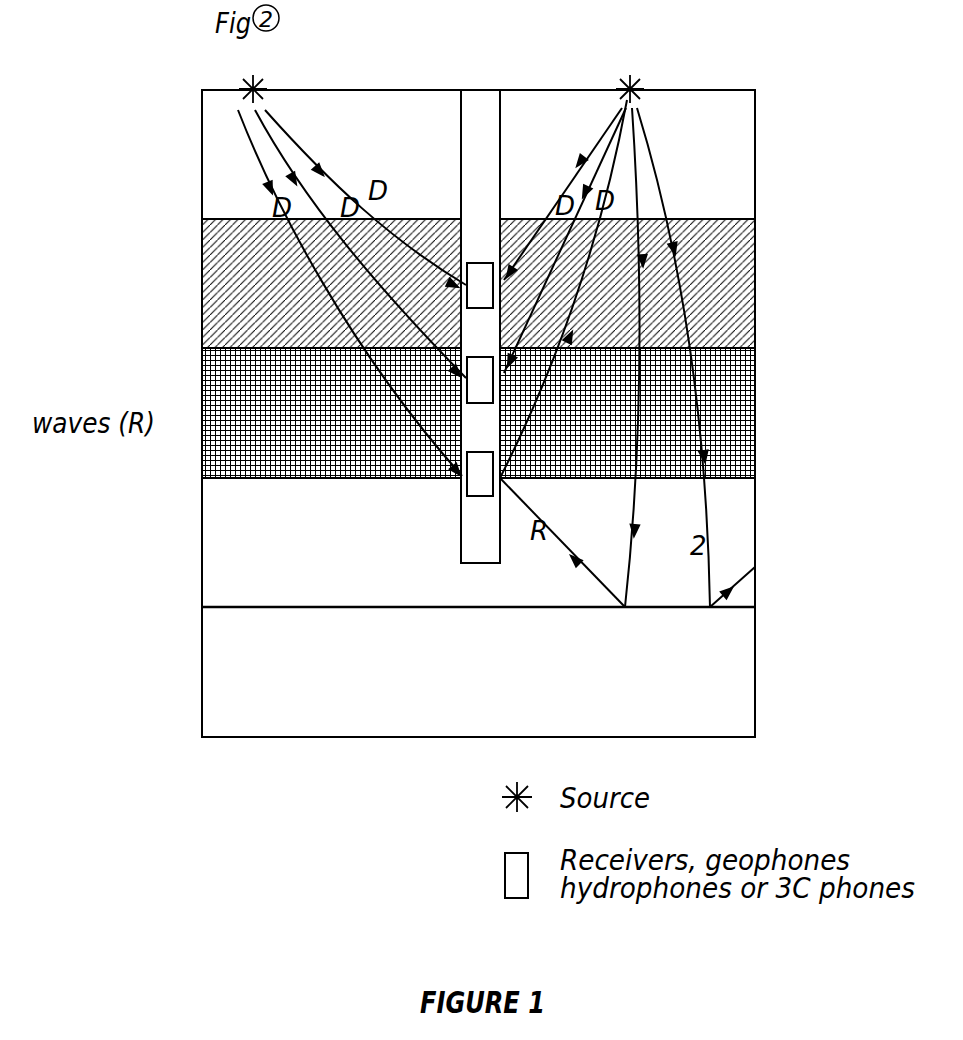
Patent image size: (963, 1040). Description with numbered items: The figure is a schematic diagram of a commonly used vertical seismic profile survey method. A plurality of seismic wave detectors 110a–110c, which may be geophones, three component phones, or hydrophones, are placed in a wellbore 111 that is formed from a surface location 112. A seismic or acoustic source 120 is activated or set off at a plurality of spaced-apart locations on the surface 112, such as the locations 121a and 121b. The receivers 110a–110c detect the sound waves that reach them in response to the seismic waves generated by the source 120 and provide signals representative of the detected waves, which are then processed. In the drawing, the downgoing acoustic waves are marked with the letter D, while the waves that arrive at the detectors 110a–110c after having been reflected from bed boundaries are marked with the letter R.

The seismic or acoustic source 120 is at (242, 82).
The source location 121a is at (265, 80).
The source location 121b is at (618, 82).
The wellbore 111 is at (459, 128).
The surface location 112 is at (697, 88).
The seismic wave detector 110c is at (469, 262).
The seismic wave detector 110a is at (467, 494).